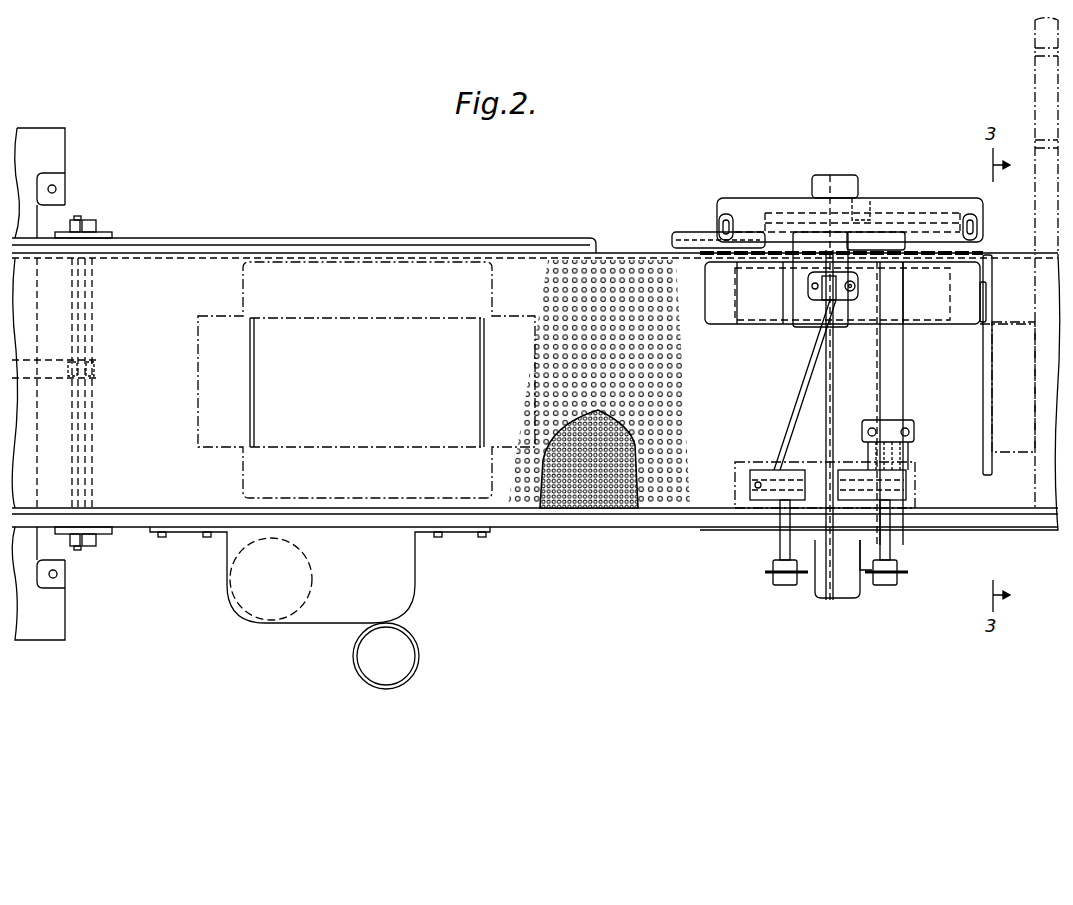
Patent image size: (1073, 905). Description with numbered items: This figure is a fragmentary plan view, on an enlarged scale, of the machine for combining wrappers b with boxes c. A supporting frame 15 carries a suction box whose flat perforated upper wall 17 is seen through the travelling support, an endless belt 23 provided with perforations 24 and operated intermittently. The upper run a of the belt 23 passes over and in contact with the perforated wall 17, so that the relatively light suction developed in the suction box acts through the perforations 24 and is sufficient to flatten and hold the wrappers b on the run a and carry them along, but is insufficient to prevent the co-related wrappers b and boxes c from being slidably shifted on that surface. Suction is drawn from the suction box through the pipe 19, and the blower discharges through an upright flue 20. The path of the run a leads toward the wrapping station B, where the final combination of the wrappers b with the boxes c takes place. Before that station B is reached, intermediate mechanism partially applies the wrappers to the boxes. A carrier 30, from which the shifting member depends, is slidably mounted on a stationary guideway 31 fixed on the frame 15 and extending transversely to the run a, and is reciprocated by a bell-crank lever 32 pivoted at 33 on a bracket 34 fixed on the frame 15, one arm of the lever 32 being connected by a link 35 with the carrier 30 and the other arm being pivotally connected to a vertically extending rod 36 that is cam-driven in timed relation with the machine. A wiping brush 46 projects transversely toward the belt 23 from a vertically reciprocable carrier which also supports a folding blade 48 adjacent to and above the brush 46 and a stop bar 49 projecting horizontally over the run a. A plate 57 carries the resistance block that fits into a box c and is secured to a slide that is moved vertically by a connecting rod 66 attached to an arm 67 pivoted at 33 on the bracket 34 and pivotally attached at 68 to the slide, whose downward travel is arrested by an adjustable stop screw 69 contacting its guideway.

The upper run of the belt a is at (223, 255).
The wrapper b is at (195, 404).
The box c is at (256, 380).
The supporting frame 15 is at (690, 530).
The perforated upper wall 17 is at (590, 508).
The pipe 19 is at (312, 580).
The upright flue 20 is at (419, 651).
The endless belt 23 is at (137, 505).
The perforations 24 is at (590, 290).
The carrier 30 is at (916, 432).
The stationary guideway 31 is at (905, 350).
The bell-crank lever 32 is at (897, 562).
The pivot 33 is at (935, 489).
The bracket 34 is at (836, 396).
The link 35 is at (910, 462).
The vertically extending rod 36 is at (885, 585).
The brush 46 is at (978, 258).
The folding blade 48 is at (928, 205).
The stop bar 49 is at (992, 380).
The plate 57 is at (705, 296).
The connecting rod 66 is at (783, 585).
The arm 67 is at (808, 380).
The pivotal attachment 68 is at (808, 286).
The adjustable stop screw 69 is at (856, 286).
The wrapping station B is at (1035, 78).